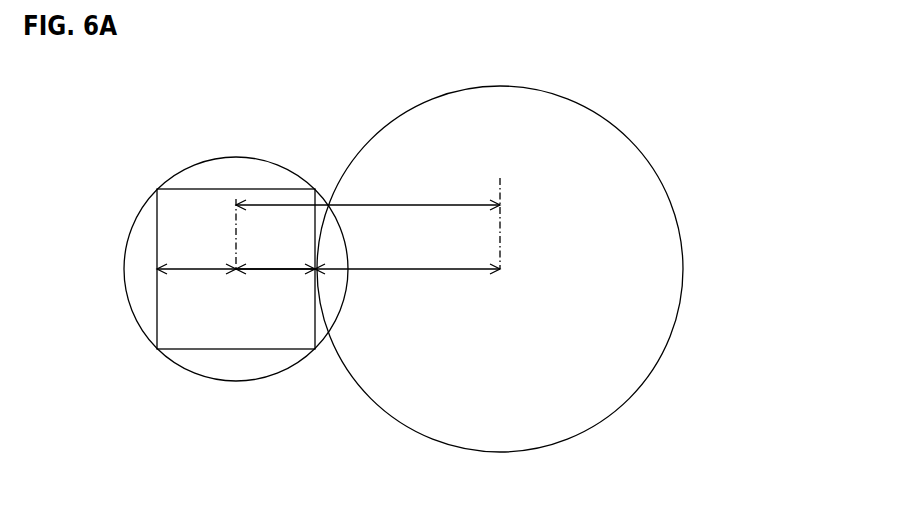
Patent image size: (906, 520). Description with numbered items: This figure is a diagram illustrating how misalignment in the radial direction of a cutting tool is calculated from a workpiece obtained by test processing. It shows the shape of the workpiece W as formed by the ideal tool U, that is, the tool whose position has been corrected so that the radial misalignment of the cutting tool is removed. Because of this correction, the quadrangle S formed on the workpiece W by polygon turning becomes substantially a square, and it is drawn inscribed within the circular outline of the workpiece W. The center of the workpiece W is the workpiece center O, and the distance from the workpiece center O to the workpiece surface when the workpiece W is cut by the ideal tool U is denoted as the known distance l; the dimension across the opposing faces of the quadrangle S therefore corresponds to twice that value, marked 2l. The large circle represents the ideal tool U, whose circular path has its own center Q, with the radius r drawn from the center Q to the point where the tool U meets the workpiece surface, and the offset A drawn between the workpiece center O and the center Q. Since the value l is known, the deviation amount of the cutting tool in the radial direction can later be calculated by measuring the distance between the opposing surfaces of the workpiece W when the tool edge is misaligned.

The workpiece W is at (239, 370).
The quadrangle S is at (192, 189).
The tool U is at (604, 395).
The workpiece center O is at (216, 234).
The center of circular region U Q is at (509, 236).
The distance between centers O and Q A is at (368, 198).
The radius of circular region U r is at (407, 261).
The side length of square 2l is at (236, 284).
The distance from workpiece center to workpiece surface l is at (275, 259).